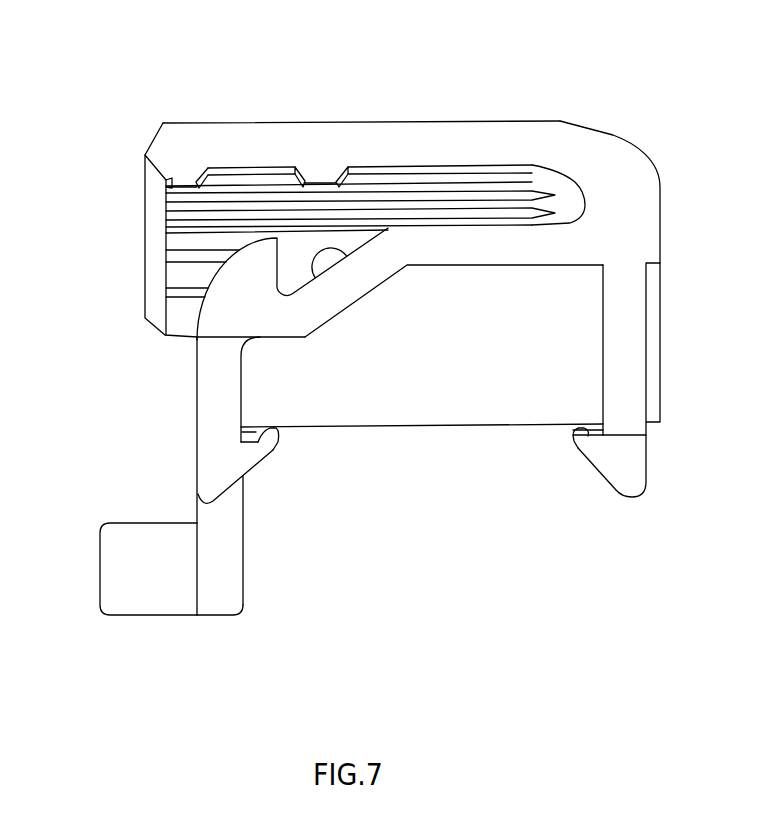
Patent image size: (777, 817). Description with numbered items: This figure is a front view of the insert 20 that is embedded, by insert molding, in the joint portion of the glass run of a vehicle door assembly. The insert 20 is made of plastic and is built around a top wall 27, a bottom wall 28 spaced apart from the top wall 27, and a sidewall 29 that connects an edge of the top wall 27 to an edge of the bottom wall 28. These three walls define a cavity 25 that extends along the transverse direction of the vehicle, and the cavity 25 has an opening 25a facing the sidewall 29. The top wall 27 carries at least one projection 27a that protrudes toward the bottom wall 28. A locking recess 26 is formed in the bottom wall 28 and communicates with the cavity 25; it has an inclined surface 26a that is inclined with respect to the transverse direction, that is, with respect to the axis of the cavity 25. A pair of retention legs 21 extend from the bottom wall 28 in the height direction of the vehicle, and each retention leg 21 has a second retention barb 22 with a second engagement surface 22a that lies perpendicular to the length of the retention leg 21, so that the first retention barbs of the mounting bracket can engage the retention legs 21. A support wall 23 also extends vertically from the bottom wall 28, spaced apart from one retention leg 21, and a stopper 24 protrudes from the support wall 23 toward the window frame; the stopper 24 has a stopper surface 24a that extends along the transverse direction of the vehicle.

The insert 20 is at (141, 29).
The retention leg 21 is at (207, 399).
The second retention barb 22 is at (235, 468).
The second engagement surface 22a is at (273, 430).
The support wall 23 is at (228, 537).
The stopper 24 is at (94, 597).
The stopper surface 24a is at (110, 560).
The cavity 25 is at (537, 183).
The opening 25a is at (222, 240).
The locking recess 26 is at (297, 247).
The inclined surface 26a is at (347, 257).
The top wall 27 is at (415, 135).
The projection 27a is at (287, 172).
The bottom wall 28 is at (450, 252).
The sidewall 29 is at (648, 202).